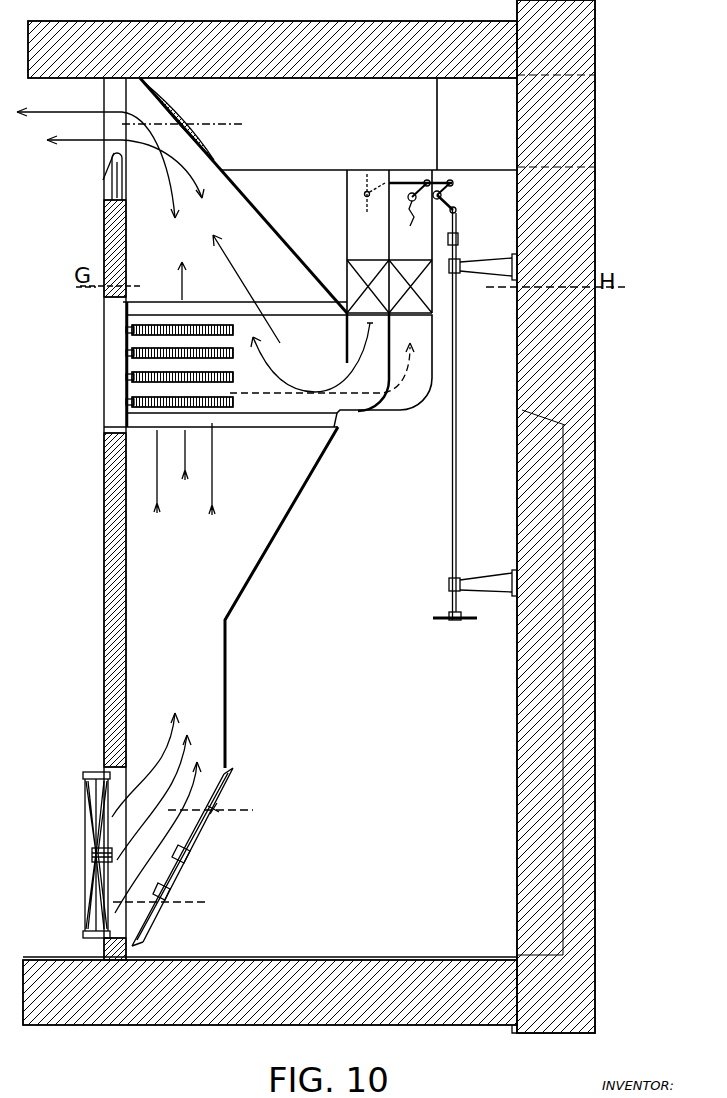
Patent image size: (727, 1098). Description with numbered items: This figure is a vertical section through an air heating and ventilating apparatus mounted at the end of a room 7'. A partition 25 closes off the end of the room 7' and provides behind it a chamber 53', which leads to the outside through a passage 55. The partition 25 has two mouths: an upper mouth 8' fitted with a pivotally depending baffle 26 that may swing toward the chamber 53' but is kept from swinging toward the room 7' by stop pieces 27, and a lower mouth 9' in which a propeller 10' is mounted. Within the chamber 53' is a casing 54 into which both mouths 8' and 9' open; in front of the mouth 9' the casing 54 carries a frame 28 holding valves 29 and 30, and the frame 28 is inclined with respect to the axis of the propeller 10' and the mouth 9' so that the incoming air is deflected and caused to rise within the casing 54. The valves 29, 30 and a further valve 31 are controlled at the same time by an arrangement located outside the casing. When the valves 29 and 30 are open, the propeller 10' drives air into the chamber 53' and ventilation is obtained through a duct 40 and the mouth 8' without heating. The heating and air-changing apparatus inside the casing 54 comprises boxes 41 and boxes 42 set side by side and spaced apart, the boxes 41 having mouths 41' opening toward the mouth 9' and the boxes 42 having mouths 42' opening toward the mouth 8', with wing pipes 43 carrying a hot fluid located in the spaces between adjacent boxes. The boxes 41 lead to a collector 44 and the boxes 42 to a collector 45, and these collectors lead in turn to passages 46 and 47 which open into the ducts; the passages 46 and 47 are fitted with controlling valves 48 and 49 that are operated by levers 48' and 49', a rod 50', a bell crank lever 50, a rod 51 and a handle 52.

The room 7' is at (42, 505).
The mouth 8' is at (110, 153).
The mouth 9' is at (156, 813).
The propeller 10' is at (86, 855).
The partition 25 is at (104, 594).
The pivotally depending baffle 26 is at (122, 186).
The stop pieces 27 is at (107, 194).
The frame 28 is at (232, 769).
The valve 29 is at (222, 796).
The valve 30 is at (165, 889).
The valve 31 is at (200, 147).
The duct 40 is at (369, 124).
The boxes 41 is at (280, 377).
The mouths 41' is at (221, 464).
The boxes 42 is at (322, 397).
The mouths 42' is at (231, 289).
The wing pipes 43 is at (127, 398).
The collector 44 is at (425, 288).
The collector 45 is at (370, 302).
The passage 46 is at (413, 250).
The passage 47 is at (365, 242).
The controlling valve 48 is at (411, 219).
The lever 48' is at (441, 170).
The controlling valve 49 is at (346, 197).
The lever 49' is at (382, 167).
The bell crank lever 50 is at (463, 202).
The rod 50' is at (421, 163).
The rod 51 is at (457, 410).
The handle 52 is at (440, 622).
The chamber 53' is at (320, 628).
The casing 54 is at (268, 541).
The passage 55 is at (563, 738).